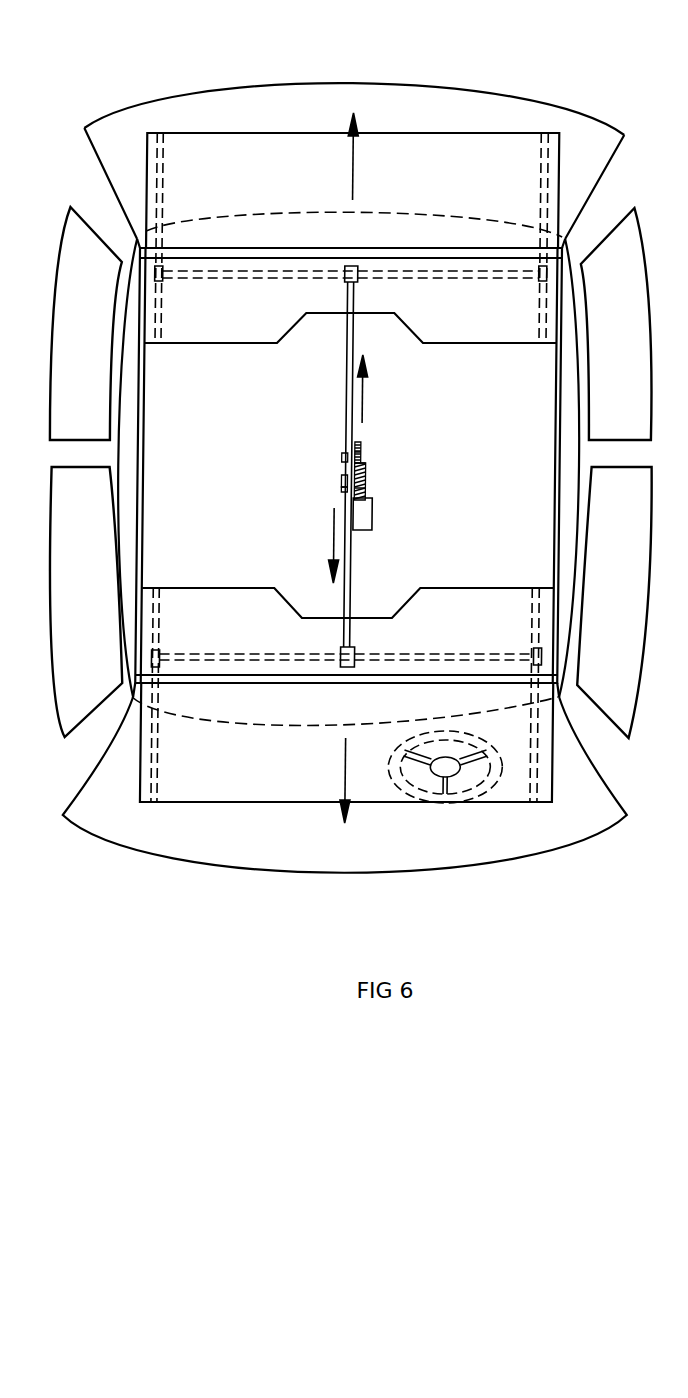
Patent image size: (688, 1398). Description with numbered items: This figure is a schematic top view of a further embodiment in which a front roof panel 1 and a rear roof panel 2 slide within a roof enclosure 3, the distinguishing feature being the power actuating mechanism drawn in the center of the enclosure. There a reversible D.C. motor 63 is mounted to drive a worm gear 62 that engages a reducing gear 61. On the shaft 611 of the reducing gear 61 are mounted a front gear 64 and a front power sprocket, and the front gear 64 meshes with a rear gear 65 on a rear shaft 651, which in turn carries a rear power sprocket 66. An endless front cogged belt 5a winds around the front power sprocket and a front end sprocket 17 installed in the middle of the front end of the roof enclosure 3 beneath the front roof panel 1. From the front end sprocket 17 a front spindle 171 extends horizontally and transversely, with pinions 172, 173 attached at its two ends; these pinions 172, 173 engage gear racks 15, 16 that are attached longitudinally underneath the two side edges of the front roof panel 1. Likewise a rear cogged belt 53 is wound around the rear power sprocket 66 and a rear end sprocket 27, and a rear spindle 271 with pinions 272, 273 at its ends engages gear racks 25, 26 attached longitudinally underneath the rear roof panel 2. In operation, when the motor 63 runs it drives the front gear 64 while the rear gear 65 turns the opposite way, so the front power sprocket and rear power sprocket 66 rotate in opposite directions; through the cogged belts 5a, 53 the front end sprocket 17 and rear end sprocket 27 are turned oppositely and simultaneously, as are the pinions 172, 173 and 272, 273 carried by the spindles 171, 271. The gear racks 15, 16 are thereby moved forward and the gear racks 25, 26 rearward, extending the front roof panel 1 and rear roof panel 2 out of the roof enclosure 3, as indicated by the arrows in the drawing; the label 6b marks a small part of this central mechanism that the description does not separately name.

The front roof panel 1 is at (260, 782).
The rear roof panel 2 is at (281, 155).
The roof enclosure 3 is at (142, 452).
The front cogged belt 5a is at (355, 563).
The gear rack 15 is at (162, 802).
The gear rack 16 is at (540, 797).
The front end sprocket 17 is at (358, 662).
The front spindle 171 is at (314, 657).
The pinion 172 is at (160, 652).
The pinion 173 is at (540, 648).
The gear rack 25 is at (158, 250).
The gear rack 26 is at (543, 262).
The rear end sprocket 27 is at (352, 267).
The rear spindle 271 is at (488, 272).
The pinion 272 is at (146, 231).
The pinion 273 is at (560, 233).
The rear cogged belt 53 is at (348, 388).
The reducing gear 61 is at (369, 476).
The shaft 611 is at (345, 479).
The worm gear 62 is at (366, 463).
The reversible D.C. motor 63 is at (375, 513).
The front gear 64 is at (369, 488).
The rear gear 65 is at (360, 446).
The rear shaft 651 is at (364, 454).
The rear power sprocket 66 is at (347, 455).
The lower stop 6b is at (347, 492).